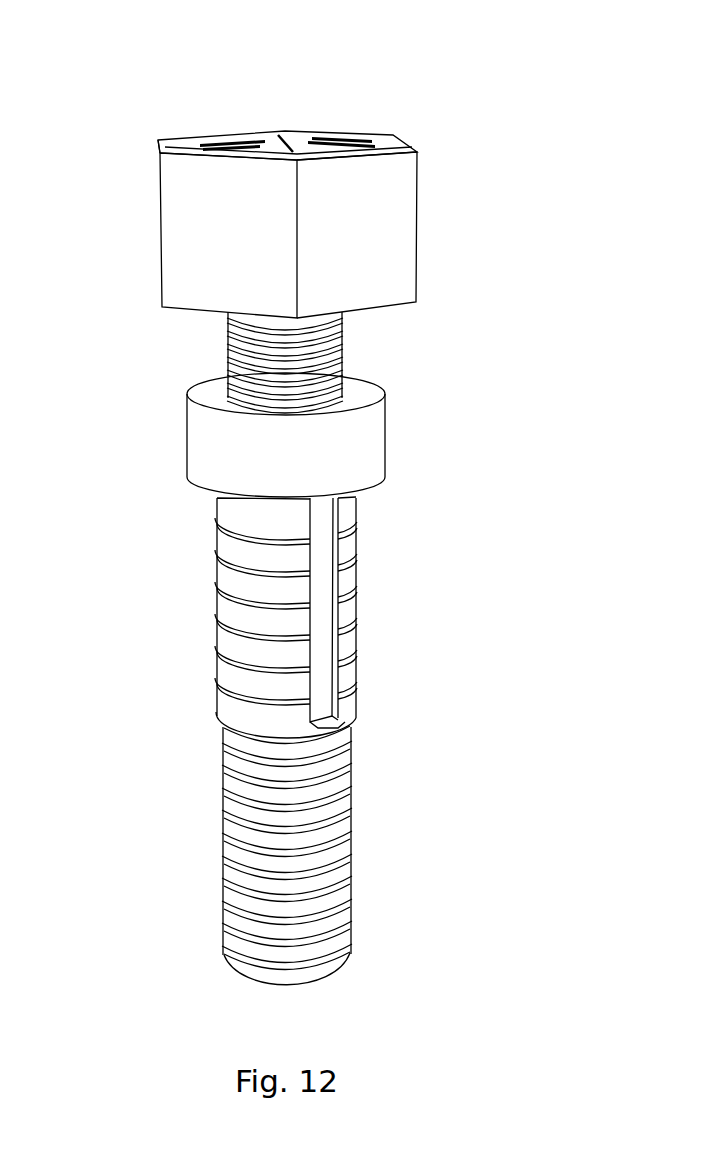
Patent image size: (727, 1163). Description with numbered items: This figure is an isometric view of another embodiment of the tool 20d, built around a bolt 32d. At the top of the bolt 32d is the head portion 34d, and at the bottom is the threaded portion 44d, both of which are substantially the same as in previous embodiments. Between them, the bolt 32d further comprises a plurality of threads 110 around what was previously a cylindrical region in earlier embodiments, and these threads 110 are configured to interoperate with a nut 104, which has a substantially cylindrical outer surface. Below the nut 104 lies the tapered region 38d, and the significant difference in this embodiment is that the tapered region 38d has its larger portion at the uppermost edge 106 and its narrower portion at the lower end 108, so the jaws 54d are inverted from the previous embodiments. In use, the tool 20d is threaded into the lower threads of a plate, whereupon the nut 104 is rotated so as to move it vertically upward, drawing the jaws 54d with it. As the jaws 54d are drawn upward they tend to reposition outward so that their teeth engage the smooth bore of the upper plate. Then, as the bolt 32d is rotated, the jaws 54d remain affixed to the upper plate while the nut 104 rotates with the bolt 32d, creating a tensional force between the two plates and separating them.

The tool 20d is at (410, 96).
The bolt 32d is at (163, 252).
The head portion 34d is at (418, 240).
The threads 110 is at (343, 357).
The nut 104 is at (386, 434).
The uppermost edge 106 is at (318, 513).
The tapered region 38d is at (340, 561).
The jaws 54d is at (358, 622).
The lower end 108 is at (352, 730).
The threaded portion 44d is at (353, 873).